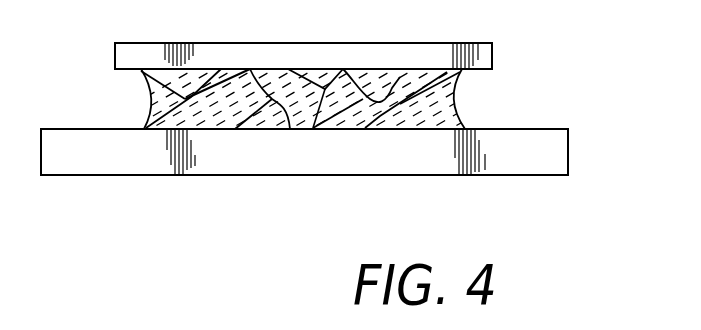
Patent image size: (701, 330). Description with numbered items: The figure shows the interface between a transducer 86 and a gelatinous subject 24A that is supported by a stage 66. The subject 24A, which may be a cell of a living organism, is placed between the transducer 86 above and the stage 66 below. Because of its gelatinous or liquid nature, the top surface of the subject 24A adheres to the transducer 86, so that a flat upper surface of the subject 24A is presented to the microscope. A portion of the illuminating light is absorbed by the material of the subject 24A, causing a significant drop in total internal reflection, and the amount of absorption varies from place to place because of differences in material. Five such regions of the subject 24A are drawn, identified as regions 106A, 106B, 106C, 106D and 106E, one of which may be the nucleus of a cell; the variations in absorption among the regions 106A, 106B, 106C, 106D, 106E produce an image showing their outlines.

The transducer 86 is at (115, 53).
The stage 66 is at (128, 176).
The subject 24A is at (457, 104).
The region 106A is at (175, 82).
The region 106B is at (234, 112).
The region 106C is at (298, 95).
The region 106D is at (383, 100).
The region 106E is at (408, 85).